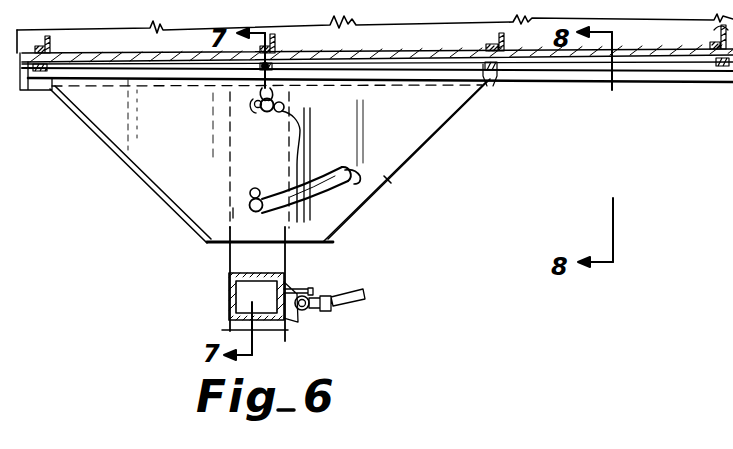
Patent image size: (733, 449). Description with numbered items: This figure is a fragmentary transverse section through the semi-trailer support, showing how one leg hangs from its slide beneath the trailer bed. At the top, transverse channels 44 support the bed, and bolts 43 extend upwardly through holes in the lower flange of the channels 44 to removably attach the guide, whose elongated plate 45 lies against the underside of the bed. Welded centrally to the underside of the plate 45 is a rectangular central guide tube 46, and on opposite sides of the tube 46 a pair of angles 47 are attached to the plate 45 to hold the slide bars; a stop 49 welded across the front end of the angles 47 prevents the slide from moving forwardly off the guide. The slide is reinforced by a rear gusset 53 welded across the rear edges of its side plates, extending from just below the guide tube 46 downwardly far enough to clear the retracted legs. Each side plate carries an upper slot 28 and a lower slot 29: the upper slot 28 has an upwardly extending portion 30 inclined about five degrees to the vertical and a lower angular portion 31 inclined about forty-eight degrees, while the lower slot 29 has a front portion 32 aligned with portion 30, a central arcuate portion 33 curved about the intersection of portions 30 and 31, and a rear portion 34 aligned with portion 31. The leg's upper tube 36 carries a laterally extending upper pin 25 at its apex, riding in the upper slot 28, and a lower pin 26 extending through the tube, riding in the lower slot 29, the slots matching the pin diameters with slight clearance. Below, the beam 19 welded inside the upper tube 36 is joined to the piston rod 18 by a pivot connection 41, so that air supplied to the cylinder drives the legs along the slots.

The piston rod 18 is at (342, 304).
The beam 19 is at (228, 301).
The upper pin 25 is at (284, 101).
The lower pin 26 is at (233, 212).
The upper slot 28 is at (256, 106).
The lower slot 29 is at (328, 196).
The upwardly extending portion 30 is at (255, 98).
The lower angular portion 31 is at (292, 113).
The front portion 32 is at (276, 163).
The central arcuate portion 33 is at (303, 192).
The rear portion 34 is at (360, 172).
The upper tube 36 is at (228, 260).
The pivot connection 41 is at (304, 291).
The bolts 43 is at (42, 70).
The transverse channels 44 is at (53, 39).
The elongated plate 45 is at (691, 51).
The central guide tube 46 is at (583, 84).
The angles 47 is at (659, 70).
The stop 49 is at (20, 78).
The rear gusset 53 is at (430, 143).